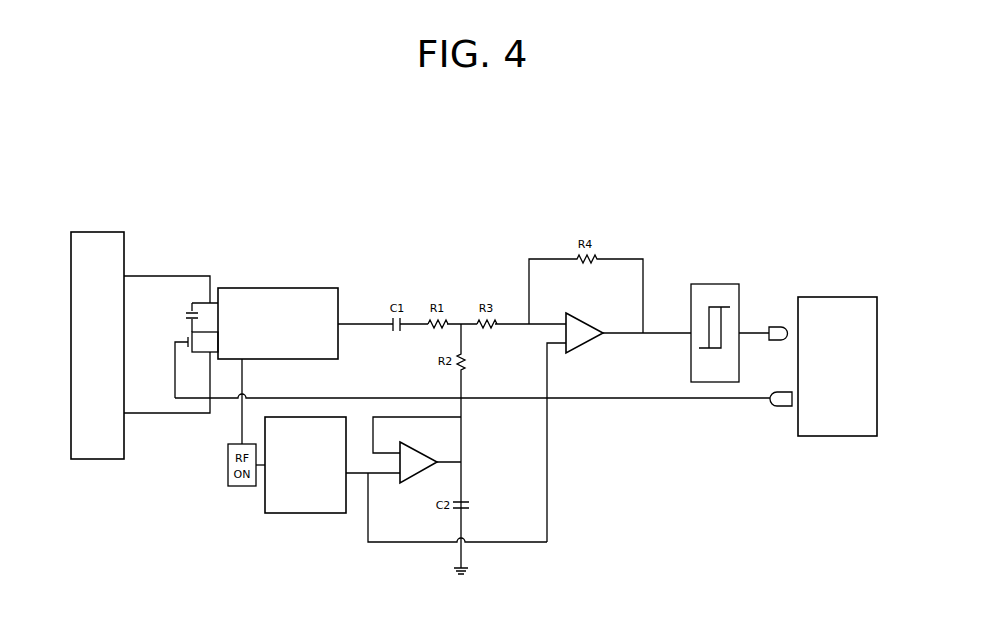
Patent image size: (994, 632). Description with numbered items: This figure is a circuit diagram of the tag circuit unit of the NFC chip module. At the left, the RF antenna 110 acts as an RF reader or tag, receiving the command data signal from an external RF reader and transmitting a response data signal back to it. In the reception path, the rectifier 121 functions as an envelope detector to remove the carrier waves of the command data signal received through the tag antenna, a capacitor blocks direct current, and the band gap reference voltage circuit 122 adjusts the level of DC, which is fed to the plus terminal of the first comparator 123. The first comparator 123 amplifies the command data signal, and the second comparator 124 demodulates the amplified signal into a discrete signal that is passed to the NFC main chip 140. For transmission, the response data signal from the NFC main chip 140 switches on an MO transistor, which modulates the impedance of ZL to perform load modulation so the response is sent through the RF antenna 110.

The RF antenna 110 is at (98, 228).
The rectifier 121 is at (277, 285).
The band gap reference voltage circuit 122 is at (305, 513).
The first comparator (OP amp) 123 is at (420, 443).
The second comparator (OP amp) 124 is at (588, 321).
The NFC main chip 140 is at (837, 293).